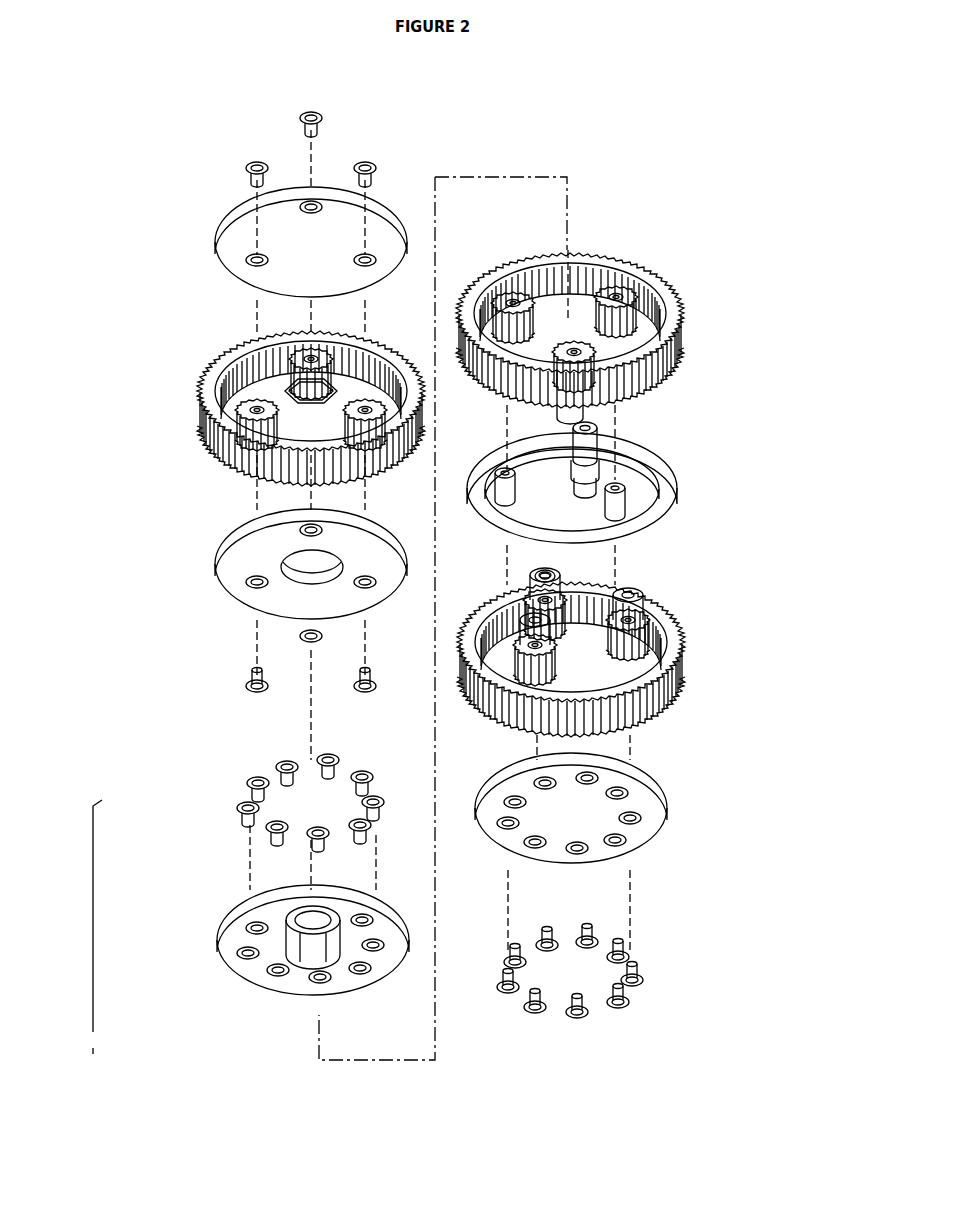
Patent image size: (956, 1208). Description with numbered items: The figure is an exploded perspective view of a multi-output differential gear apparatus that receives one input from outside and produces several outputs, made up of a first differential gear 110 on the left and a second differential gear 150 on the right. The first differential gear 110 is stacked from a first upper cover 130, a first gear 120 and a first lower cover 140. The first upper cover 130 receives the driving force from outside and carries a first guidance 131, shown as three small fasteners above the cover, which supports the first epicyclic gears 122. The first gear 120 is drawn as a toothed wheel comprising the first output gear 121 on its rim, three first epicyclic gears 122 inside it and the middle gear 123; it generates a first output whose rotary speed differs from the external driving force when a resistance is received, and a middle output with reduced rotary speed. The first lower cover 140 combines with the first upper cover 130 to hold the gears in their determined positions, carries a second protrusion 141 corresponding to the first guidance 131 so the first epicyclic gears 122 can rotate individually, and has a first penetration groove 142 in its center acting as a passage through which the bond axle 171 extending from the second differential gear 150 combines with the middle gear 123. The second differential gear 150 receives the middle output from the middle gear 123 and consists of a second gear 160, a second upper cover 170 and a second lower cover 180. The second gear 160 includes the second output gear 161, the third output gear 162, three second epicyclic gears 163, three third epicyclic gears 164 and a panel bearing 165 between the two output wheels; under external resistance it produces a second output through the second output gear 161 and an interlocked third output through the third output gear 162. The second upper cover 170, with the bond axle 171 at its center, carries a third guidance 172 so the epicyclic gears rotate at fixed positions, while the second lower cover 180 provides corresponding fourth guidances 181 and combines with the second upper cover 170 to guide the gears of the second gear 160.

The first differential gear 110 is at (100, 695).
The first gear 120 is at (146, 384).
The first output gear 121 is at (205, 430).
The first epicyclic gears 122 is at (232, 410).
The middle gear 123 is at (255, 398).
The first upper cover 130 is at (228, 238).
The first guidance 131 is at (250, 168).
The first lower cover 140 is at (225, 568).
The second protrusion 141 is at (252, 680).
The first penetration groove 142 is at (305, 565).
The second differential gear 150 is at (778, 961).
The second gear 160 is at (730, 647).
The second output gear 161 is at (655, 280).
The third output gear 162 is at (660, 610).
The second epicyclic gears 163 is at (645, 300).
The third epicyclic gears 164 is at (640, 655).
The panel bearing 165 is at (660, 470).
The second upper cover 170 is at (240, 945).
The bond axle 171 is at (290, 915).
The third guidance 172 is at (240, 800).
The second lower cover 180 is at (658, 810).
The fourth guidances 181 is at (632, 968).